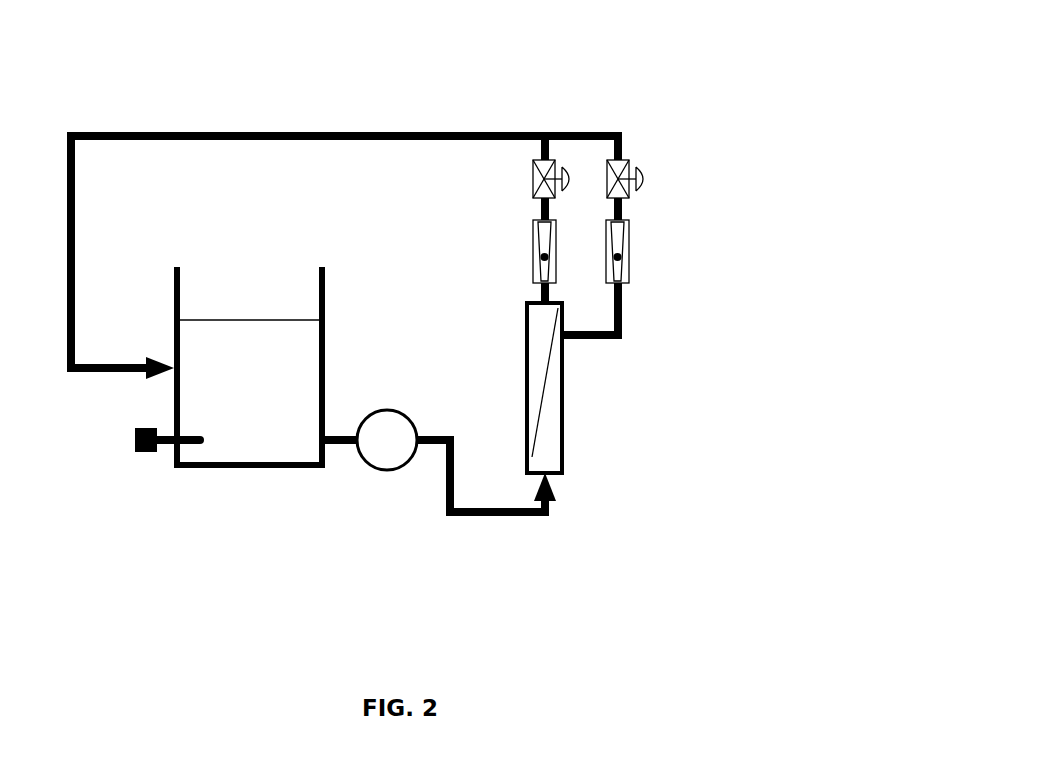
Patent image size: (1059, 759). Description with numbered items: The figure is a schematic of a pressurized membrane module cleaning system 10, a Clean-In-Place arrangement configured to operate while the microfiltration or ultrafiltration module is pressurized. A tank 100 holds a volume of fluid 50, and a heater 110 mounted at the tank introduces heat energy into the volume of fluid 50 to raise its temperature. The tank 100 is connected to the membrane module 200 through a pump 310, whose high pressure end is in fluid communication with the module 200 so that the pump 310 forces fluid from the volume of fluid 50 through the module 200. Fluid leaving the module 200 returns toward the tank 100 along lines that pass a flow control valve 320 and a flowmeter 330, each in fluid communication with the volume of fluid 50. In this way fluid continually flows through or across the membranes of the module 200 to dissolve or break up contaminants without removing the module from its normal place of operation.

The system 10 is at (690, 82).
The volume of fluid 50 is at (222, 310).
The tank 100 is at (165, 393).
The heater 110 is at (129, 458).
The membrane module 200 is at (527, 417).
The pump 310 is at (411, 403).
The flow control valve 320 is at (600, 145).
The flowmeter 330 is at (597, 228).